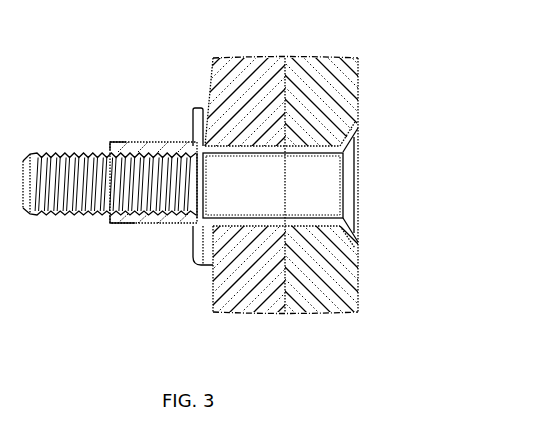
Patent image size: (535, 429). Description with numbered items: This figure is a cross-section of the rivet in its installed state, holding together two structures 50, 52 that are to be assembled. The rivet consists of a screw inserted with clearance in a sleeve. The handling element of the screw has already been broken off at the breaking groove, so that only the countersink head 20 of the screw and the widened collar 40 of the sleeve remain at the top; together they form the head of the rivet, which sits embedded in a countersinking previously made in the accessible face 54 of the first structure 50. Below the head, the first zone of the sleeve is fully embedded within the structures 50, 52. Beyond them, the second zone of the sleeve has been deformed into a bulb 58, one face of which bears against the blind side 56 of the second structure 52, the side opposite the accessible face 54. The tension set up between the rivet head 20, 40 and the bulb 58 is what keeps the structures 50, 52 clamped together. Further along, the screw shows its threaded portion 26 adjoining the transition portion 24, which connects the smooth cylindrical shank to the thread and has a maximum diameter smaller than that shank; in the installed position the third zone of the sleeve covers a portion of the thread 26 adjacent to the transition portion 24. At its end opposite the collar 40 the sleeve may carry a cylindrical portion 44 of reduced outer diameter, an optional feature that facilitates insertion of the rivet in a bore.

The countersink head 20 is at (358, 178).
The transition portion 24 is at (200, 200).
The threaded portion 26 is at (80, 160).
The widened collar 40 is at (357, 123).
The cylindrical portion of reduced outer diameter 44 is at (132, 143).
The structure 50 is at (258, 57).
The structure 52 is at (317, 57).
The accessible face 54 is at (357, 297).
The blind side 56 is at (213, 295).
The bulb 58 is at (200, 106).